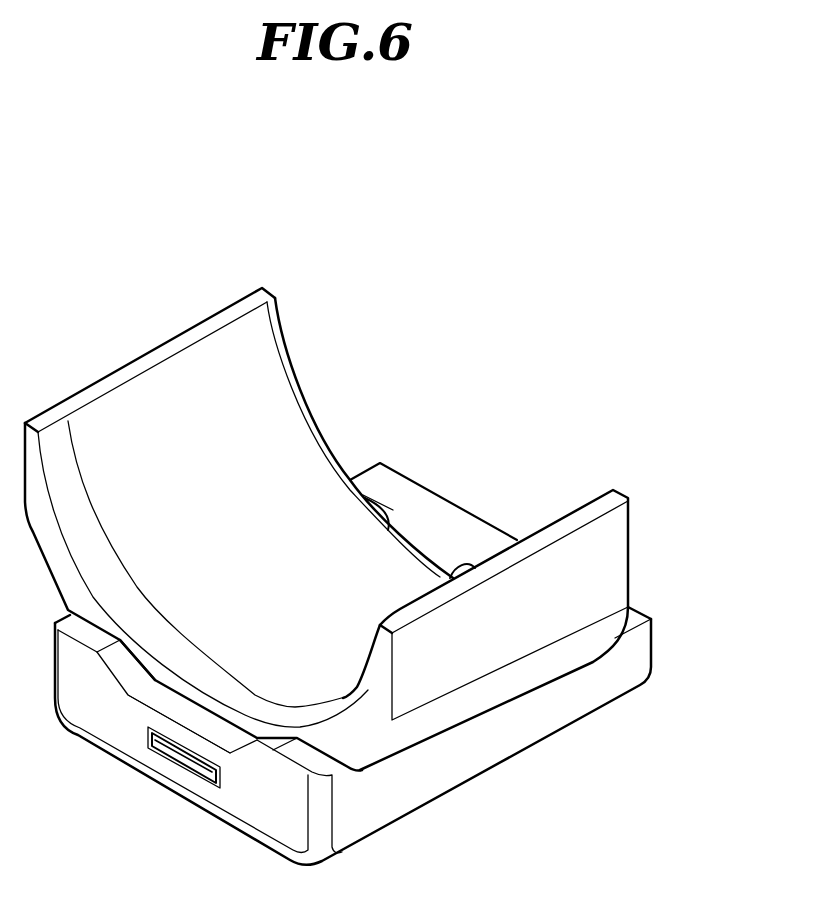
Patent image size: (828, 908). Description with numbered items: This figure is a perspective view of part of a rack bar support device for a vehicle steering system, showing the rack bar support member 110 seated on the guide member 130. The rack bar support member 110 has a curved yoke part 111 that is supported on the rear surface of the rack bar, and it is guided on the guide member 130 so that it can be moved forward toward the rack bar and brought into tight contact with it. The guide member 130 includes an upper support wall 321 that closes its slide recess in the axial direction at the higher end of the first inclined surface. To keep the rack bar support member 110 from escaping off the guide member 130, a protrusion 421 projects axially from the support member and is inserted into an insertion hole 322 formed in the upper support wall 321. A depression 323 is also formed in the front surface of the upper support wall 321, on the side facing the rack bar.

The yoke part 111 is at (188, 407).
The rack bar support member 110 is at (608, 562).
The guide member 130 is at (638, 650).
The depression 323 is at (155, 697).
The upper support wall 321 is at (247, 800).
The insertion hole 322 is at (197, 773).
The protrusion 421 is at (168, 752).